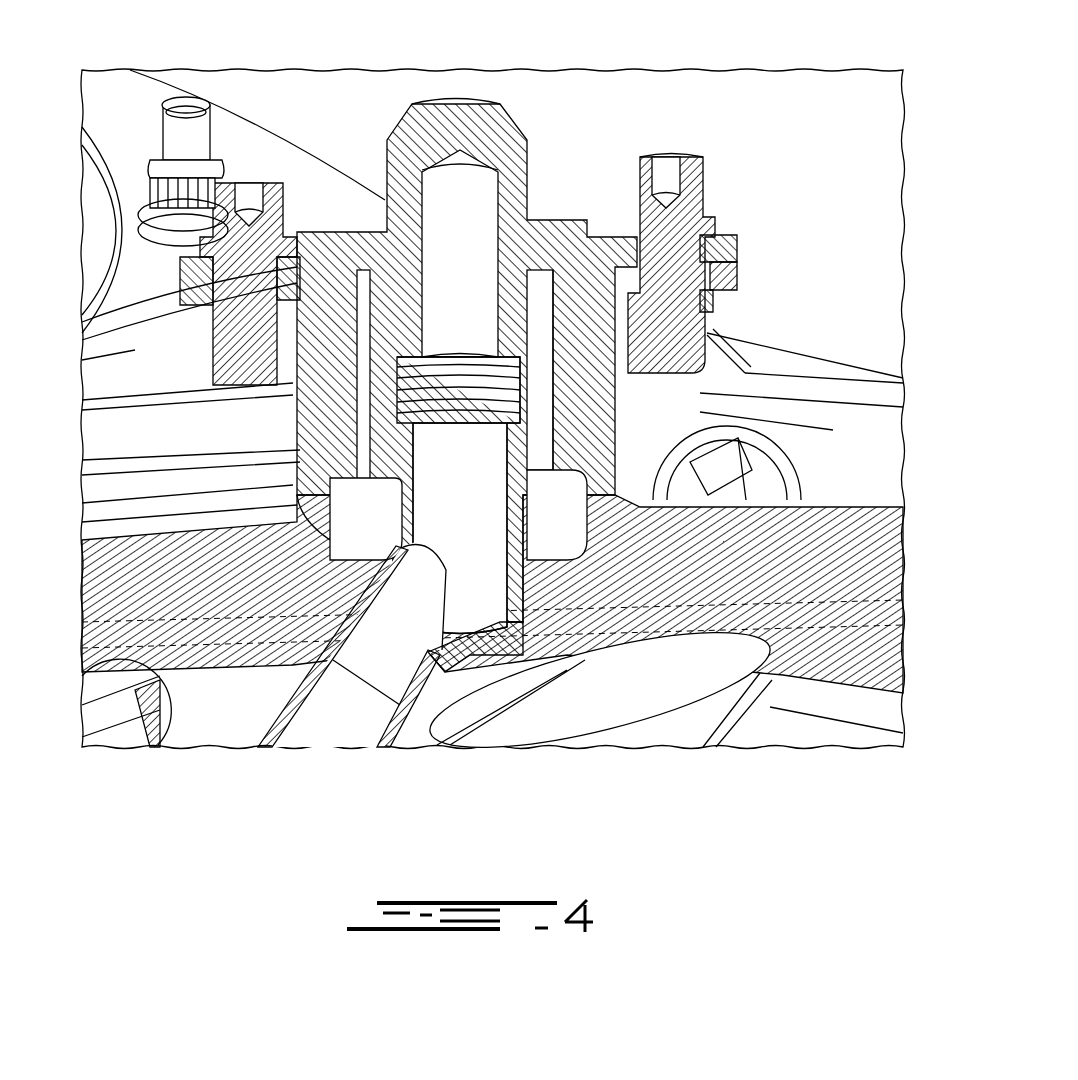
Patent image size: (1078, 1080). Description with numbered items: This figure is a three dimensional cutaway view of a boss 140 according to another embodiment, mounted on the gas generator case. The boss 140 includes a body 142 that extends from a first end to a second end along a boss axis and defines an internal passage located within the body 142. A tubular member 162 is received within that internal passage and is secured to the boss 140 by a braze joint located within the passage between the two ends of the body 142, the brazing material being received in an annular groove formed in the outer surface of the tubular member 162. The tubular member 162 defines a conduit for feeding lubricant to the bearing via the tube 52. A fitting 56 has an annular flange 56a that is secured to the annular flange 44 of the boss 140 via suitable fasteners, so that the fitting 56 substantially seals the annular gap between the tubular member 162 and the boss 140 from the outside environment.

The fitting 56 is at (512, 212).
The annular flange 56a is at (732, 237).
The annular flange 44 is at (737, 280).
The body 142 is at (700, 393).
The boss 140 is at (270, 450).
The tube 52 is at (290, 745).
The tubular member 162 is at (558, 480).